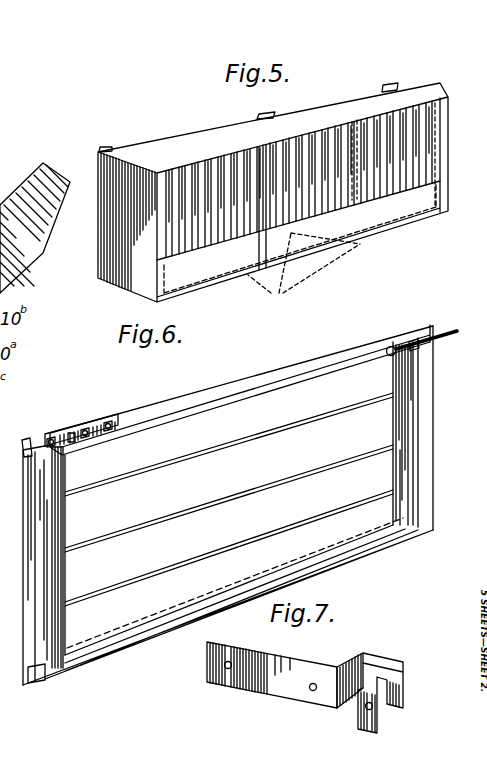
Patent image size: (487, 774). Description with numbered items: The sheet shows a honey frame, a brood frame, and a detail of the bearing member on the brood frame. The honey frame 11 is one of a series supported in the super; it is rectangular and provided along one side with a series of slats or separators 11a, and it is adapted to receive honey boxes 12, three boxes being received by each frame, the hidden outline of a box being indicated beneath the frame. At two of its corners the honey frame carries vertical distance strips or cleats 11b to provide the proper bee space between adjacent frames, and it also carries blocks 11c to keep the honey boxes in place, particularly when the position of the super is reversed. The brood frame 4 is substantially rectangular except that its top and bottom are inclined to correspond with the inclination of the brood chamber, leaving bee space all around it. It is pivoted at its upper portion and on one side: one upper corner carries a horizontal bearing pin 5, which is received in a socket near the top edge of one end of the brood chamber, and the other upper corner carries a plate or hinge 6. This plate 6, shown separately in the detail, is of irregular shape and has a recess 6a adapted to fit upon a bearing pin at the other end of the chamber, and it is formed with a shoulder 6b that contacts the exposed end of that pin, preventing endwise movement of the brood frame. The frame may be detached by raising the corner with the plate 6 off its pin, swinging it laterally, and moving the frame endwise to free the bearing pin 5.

In FIG. 6, the brood frame 4 is at (433, 455).
In FIG. 6, the bearing pin 5 is at (437, 340).
In FIG. 6, the plate or hinge 6 is at (96, 430).
In FIG. 7, the plate or hinge 6 is at (270, 688).
In FIG. 6, the recess 6a is at (36, 443).
In FIG. 7, the recess 6a is at (380, 690).
In FIG. 6, the shoulder 6b is at (71, 436).
In FIG. 7, the shoulder 6b is at (347, 664).
In FIG. 5, the honey frame 11 is at (161, 152).
In FIG. 5, the slats or separators 11a is at (394, 244).
In FIG. 5, the vertical distance strips or cleats 11b is at (101, 148).
In FIG. 5, the blocks 11c is at (272, 116).
In FIG. 5, the honey boxes 12 is at (304, 273).